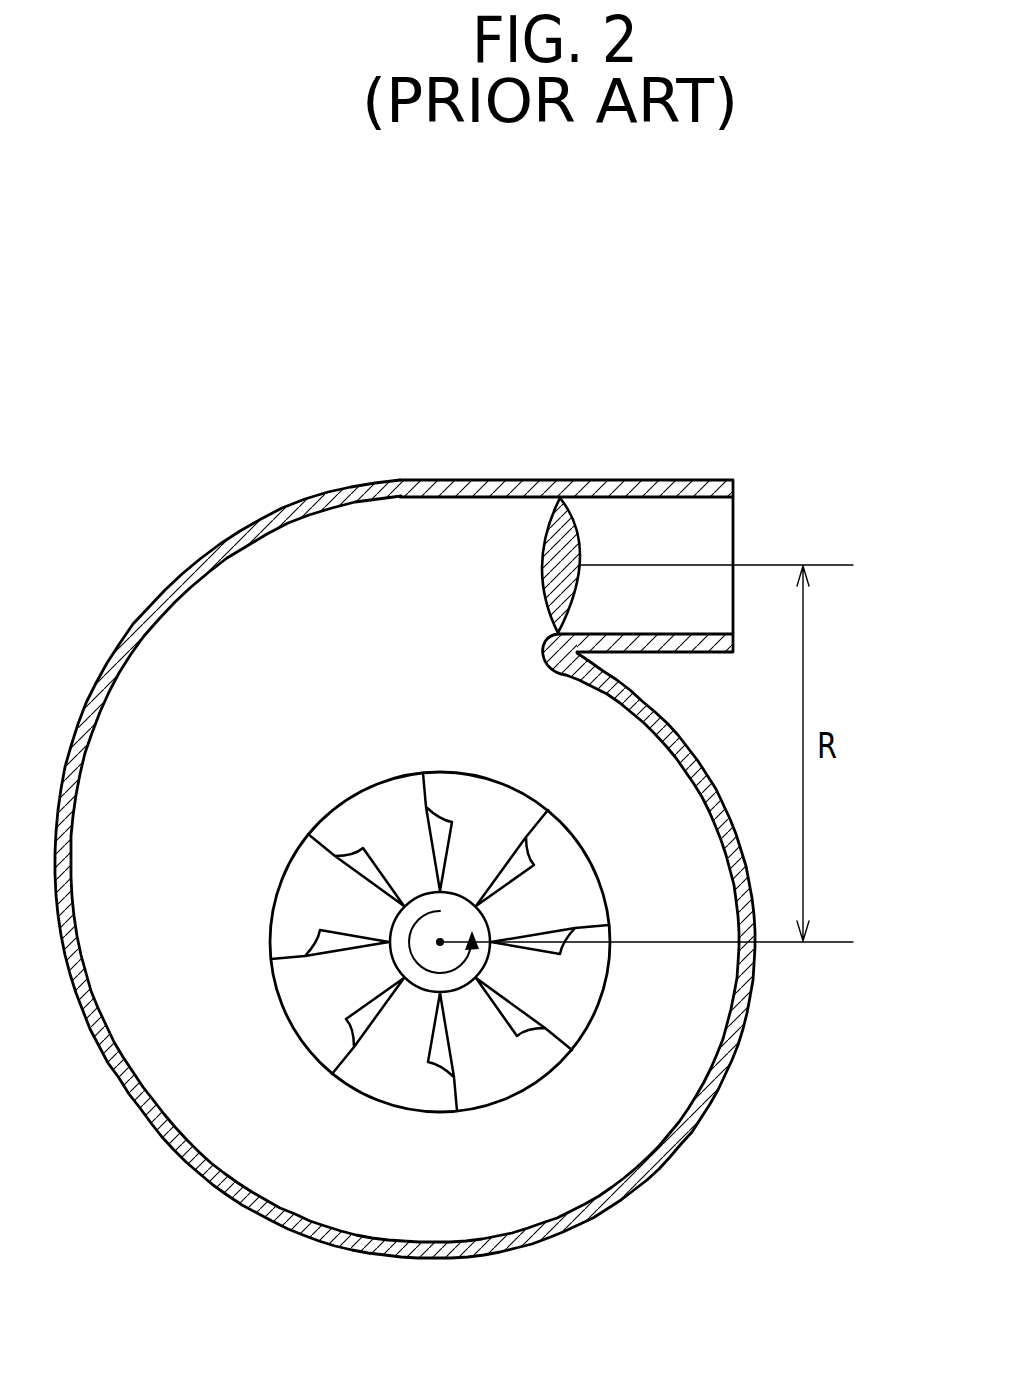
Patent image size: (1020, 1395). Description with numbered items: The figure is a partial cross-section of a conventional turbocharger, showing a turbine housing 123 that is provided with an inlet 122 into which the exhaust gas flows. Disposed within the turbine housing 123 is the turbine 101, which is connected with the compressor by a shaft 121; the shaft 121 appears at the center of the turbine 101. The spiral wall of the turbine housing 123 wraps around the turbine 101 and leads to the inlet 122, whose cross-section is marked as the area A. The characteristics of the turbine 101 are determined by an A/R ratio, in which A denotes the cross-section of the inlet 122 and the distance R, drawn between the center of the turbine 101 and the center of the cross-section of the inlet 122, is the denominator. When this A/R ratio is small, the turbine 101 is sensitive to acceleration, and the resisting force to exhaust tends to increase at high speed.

The turbine 101 is at (393, 1087).
The shaft 121 is at (450, 978).
The inlet 122 is at (753, 521).
The turbine housing 123 is at (713, 1073).
The cross-section of the inlet A is at (567, 527).